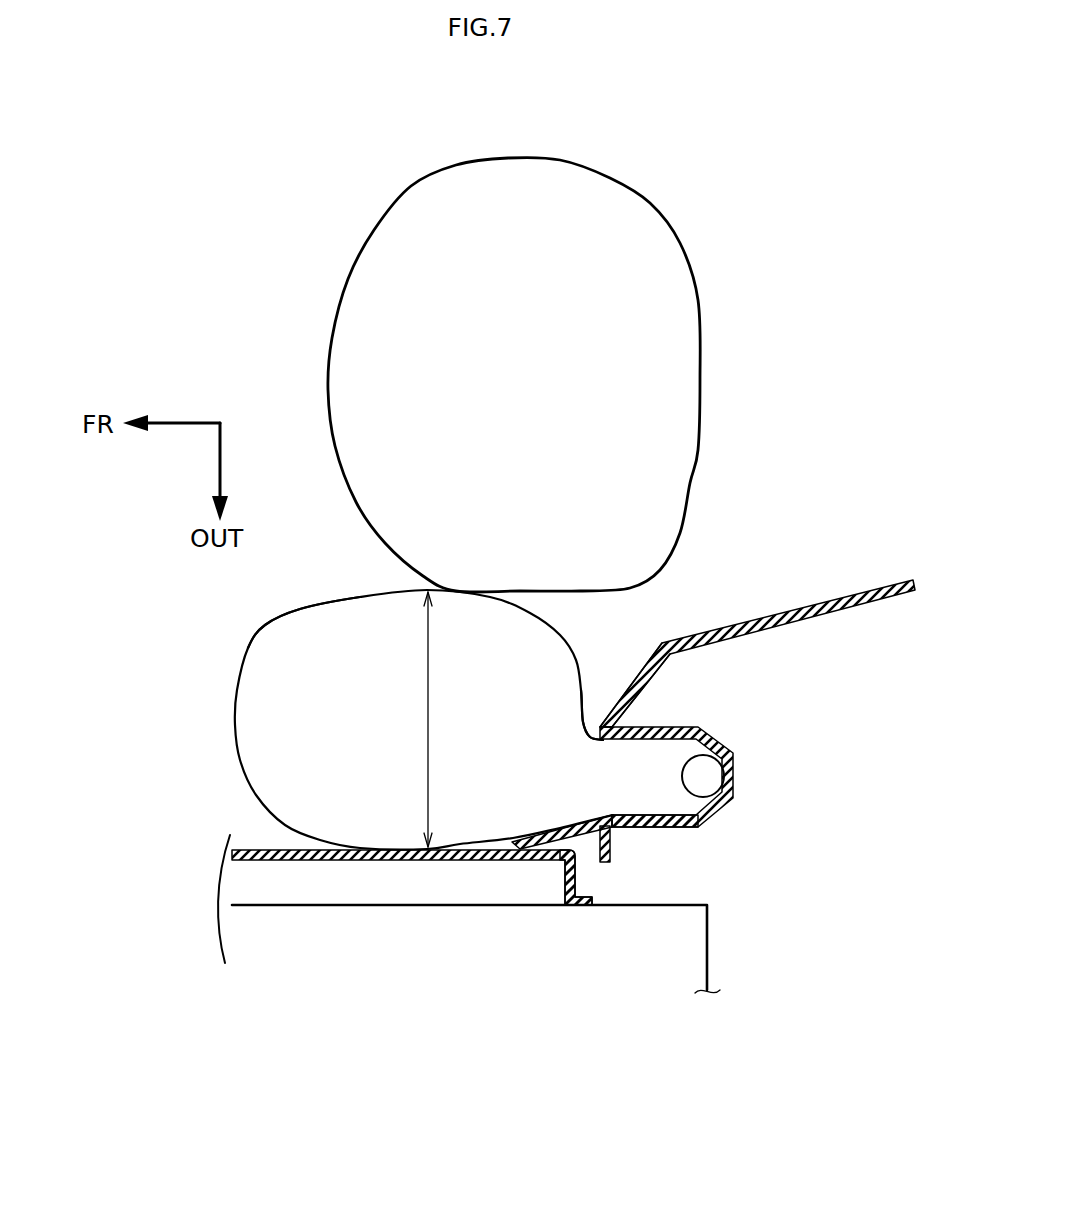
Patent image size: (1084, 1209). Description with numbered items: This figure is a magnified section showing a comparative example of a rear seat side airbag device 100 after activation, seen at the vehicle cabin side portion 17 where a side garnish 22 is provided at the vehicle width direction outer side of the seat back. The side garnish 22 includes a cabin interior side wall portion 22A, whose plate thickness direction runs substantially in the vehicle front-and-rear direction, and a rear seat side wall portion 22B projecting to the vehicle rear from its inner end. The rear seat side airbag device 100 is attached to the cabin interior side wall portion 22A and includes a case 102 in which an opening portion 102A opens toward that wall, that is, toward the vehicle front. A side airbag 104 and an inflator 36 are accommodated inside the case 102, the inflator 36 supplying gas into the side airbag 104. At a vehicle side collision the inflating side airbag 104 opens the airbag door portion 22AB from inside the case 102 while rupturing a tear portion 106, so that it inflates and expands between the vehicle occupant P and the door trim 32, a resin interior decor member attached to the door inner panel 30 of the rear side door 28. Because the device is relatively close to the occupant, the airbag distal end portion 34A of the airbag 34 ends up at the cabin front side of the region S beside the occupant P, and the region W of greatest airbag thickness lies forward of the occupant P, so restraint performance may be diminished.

The vehicle occupant P is at (518, 183).
The vehicle cabin side portion 17 is at (352, 719).
The airbag 34 is at (352, 719).
The airbag distal end portion 34A is at (233, 700).
The side airbag 104 is at (248, 650).
The tear portion 106 is at (605, 743).
The region of greatest thickness W is at (430, 723).
The region at vehicle width direction outer side of occupant S is at (528, 587).
The door trim 32 is at (412, 873).
The airbag door portion 22AB is at (572, 880).
The side garnish 22 is at (713, 740).
The rear seat side wall portion 22B is at (858, 594).
The cabin interior side wall portion 22A is at (590, 860).
The rear seat side airbag device 100 is at (603, 698).
The case 102 is at (707, 764).
The opening portion 102A is at (622, 806).
The inflator 36 is at (708, 774).
The door inner panel 30 is at (708, 956).
The rear side door 28 is at (508, 991).